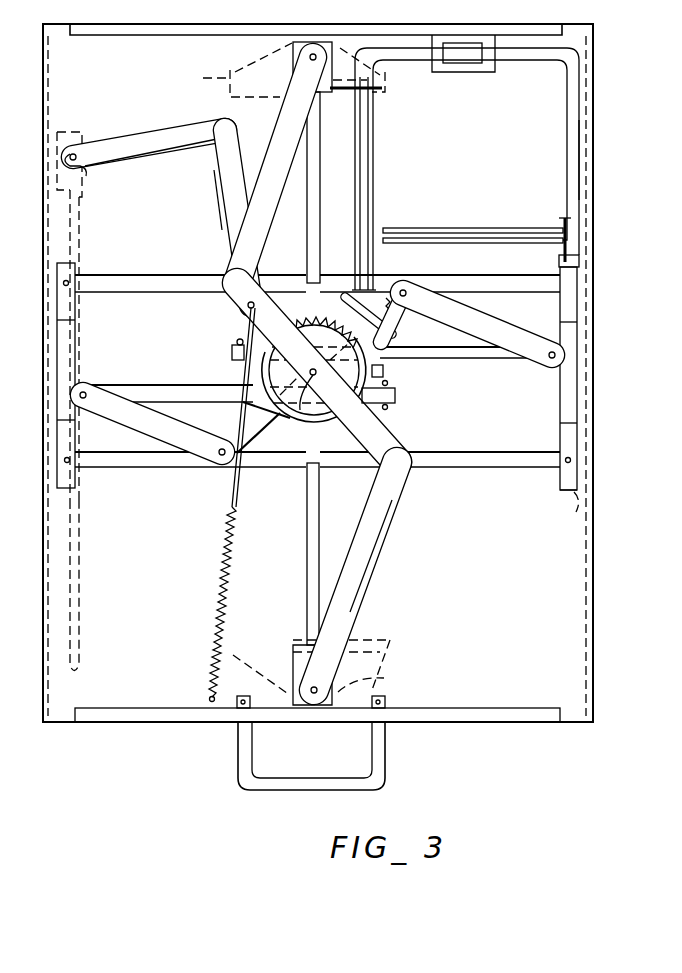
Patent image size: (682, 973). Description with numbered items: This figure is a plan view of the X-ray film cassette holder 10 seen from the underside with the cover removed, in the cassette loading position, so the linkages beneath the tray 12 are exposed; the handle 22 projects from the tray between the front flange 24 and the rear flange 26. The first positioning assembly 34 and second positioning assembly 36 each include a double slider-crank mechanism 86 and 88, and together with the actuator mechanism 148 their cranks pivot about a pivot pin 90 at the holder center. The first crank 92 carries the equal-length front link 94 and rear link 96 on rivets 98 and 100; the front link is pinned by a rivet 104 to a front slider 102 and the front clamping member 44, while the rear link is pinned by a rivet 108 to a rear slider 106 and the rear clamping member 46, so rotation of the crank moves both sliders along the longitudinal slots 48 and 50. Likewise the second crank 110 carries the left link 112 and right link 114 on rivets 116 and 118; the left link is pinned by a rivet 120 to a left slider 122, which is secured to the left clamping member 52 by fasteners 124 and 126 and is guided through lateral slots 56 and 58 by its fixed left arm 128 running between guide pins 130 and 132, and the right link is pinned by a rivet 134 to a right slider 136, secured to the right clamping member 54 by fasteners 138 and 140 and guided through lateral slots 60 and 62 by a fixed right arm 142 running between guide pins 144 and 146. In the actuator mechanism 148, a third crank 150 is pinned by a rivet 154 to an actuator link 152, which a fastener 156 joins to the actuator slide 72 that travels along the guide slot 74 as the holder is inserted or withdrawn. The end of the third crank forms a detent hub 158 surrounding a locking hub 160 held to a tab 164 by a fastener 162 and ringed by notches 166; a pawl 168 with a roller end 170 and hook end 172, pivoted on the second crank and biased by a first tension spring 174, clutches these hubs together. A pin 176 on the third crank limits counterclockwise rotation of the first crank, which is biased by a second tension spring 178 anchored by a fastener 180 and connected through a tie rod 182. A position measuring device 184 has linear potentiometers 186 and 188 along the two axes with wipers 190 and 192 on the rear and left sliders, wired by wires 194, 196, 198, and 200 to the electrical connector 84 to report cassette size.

The X-ray film cassette holder 10 is at (152, 742).
The tray 12 is at (580, 724).
The handle 22 is at (388, 757).
The front flange 24 is at (134, 708).
The rear flange 26 is at (172, 44).
The first positioning assembly 34 is at (292, 645).
The second positioning assembly 36 is at (552, 498).
The front clamping member 44 is at (398, 650).
The rear clamping member 46 is at (271, 82).
The longitudinal slot 48 is at (307, 576).
The longitudinal slot 50 is at (306, 226).
The left clamping member 52 is at (578, 505).
The right clamping member 54 is at (78, 506).
The lateral slot 56 is at (508, 452).
The lateral slot 58 is at (455, 276).
The lateral slot 60 is at (156, 470).
The lateral slot 62 is at (156, 278).
The actuator slide 72 is at (86, 128).
The guide slot 74 is at (84, 246).
The electrical connector 84 is at (464, 64).
The double slider-crank mechanism 86 is at (390, 524).
The double slider-crank mechanism 88 is at (180, 385).
The pivot pin 90 is at (300, 420).
The first crank 92 is at (400, 430).
The front link 94 is at (360, 594).
The rear link 96 is at (278, 134).
The rivet 98 is at (402, 472).
The rivet 100 is at (228, 270).
The front slider 102 is at (374, 672).
The rivet 104 is at (375, 683).
The rear slider 106 is at (288, 62).
The rivet 108 is at (290, 44).
The second crank 110 is at (388, 320).
The left link 112 is at (478, 314).
The right link 114 is at (146, 430).
The rivet 116 is at (410, 296).
The rivet 118 is at (226, 442).
The rivet 120 is at (552, 360).
The left slider 122 is at (560, 404).
The fastener 124 is at (566, 466).
The fastener 126 is at (552, 378).
The fixed left arm 128 is at (470, 362).
The guide pin 130 is at (238, 336).
The guide pin 132 is at (232, 358).
The rivet 134 is at (86, 388).
The right slider 136 is at (78, 330).
The fastener 138 is at (72, 462).
The fastener 140 is at (72, 286).
The fixed right arm 142 is at (396, 400).
The guide pin 144 is at (390, 385).
The guide pin 146 is at (386, 412).
The actuator mechanism 148 is at (204, 184).
The third crank 150 is at (204, 216).
The actuator link 152 is at (194, 124).
The rivet 154 is at (220, 145).
The fastener 156 is at (86, 178).
The detent hub 158 is at (330, 422).
The locking hub 160 is at (268, 312).
The fastener 162 is at (450, 362).
The tab 164 is at (384, 371).
The notches 166 is at (284, 330).
The pawl 168 is at (352, 282).
The roller end 170 is at (312, 318).
The hook end 172 is at (386, 346).
The first tension spring 174 is at (380, 304).
The pin 176 is at (262, 284).
The second tension spring 178 is at (228, 556).
The fastener 180 is at (212, 700).
The tie rod 182 is at (240, 490).
The position measuring device 184 is at (376, 142).
The linear potentiometer 186 is at (374, 186).
The linear potentiometer 188 is at (496, 204).
The wiper 190 is at (392, 102).
The wiper 192 is at (566, 218).
The wire 194 is at (388, 80).
The wire 196 is at (400, 60).
The wire 198 is at (566, 152).
The wire 200 is at (572, 132).